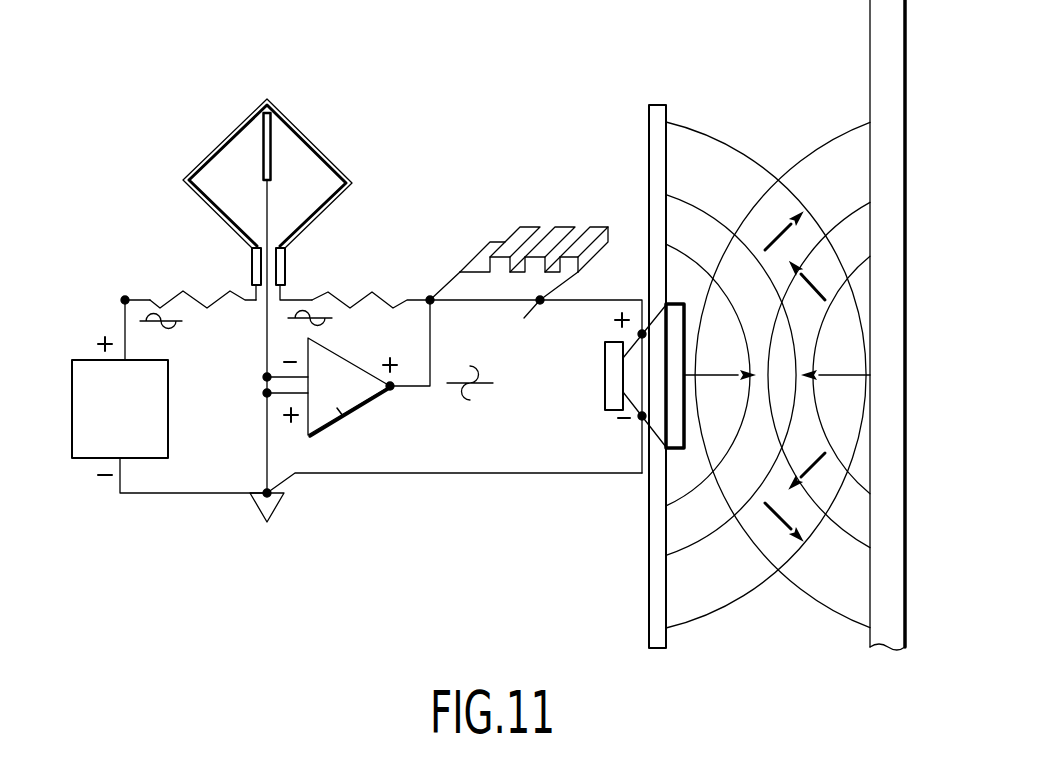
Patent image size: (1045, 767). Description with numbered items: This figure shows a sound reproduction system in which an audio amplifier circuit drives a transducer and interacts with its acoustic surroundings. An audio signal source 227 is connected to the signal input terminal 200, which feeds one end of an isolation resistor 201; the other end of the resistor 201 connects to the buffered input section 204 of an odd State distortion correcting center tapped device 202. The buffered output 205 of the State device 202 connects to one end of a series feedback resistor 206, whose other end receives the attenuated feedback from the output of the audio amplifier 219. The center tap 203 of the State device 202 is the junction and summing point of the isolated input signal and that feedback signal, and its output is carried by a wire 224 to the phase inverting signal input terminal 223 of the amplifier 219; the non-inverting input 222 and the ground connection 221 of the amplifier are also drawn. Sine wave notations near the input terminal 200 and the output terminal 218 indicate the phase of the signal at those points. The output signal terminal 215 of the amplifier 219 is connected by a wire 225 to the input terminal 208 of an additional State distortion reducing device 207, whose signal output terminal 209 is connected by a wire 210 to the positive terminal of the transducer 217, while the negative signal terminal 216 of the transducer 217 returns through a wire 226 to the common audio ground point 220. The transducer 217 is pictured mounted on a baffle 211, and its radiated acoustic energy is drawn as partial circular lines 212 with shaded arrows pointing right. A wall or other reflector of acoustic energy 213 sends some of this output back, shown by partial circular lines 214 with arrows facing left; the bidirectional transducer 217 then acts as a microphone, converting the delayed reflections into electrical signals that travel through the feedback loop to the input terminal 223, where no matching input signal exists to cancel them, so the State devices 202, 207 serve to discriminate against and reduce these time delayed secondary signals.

The signal input terminal 200 is at (119, 295).
The isolation resistor 201 is at (174, 290).
The odd State distortion correcting center tapped device 202 is at (222, 139).
The center tap 203 is at (278, 153).
The buffered input section 204 is at (242, 259).
The buffered output 205 is at (300, 260).
The series feedback resistor 206 is at (366, 283).
The State distortion reducing device 207 is at (540, 225).
The input terminal 208 is at (443, 300).
The signal output terminal 209 is at (523, 319).
The wire 210 is at (643, 294).
The baffle 211 is at (644, 150).
The partial circular lines 212 is at (728, 130).
The wall or other reflector of acoustic energy 213 is at (866, 65).
The partial circular lines 214 is at (827, 136).
The output signal terminal 215 is at (620, 330).
The negative signal terminal 216 is at (633, 427).
The transducer 217 is at (617, 390).
The output terminal 218 is at (405, 395).
The audio amplifier 219 is at (350, 420).
The common audio ground point 220 is at (284, 513).
The ground node 221 is at (255, 490).
The non-inverting input 222 is at (256, 393).
The phase inverting signal input terminal 223 is at (256, 376).
The wire 224 is at (262, 319).
The wire 225 is at (423, 337).
The wire 226 is at (483, 481).
The audio signal source 227 is at (89, 461).